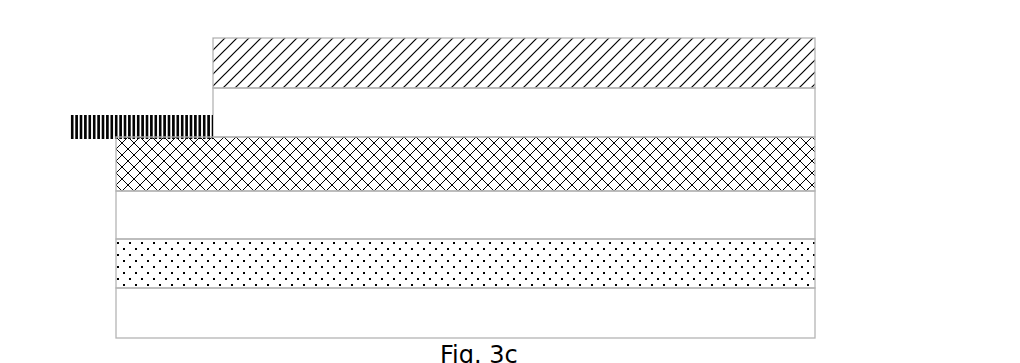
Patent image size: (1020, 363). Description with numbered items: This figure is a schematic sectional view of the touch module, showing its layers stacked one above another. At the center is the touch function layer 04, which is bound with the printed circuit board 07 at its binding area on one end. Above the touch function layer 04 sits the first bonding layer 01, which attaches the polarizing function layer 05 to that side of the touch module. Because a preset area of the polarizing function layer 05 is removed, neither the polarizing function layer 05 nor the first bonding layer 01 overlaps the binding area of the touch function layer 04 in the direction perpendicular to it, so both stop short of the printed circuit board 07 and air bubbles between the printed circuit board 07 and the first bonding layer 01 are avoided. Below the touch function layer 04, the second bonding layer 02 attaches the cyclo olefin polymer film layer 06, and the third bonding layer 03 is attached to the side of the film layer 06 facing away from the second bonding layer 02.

The first bonding layer 01 is at (782, 127).
The second bonding layer 02 is at (782, 220).
The third bonding layer 03 is at (782, 307).
The touch function layer 04 is at (788, 172).
The polarizing function layer 05 is at (772, 61).
The cyclo olefin polymer (COP) film layer 06 is at (782, 264).
The printed circuit board 07 is at (108, 127).